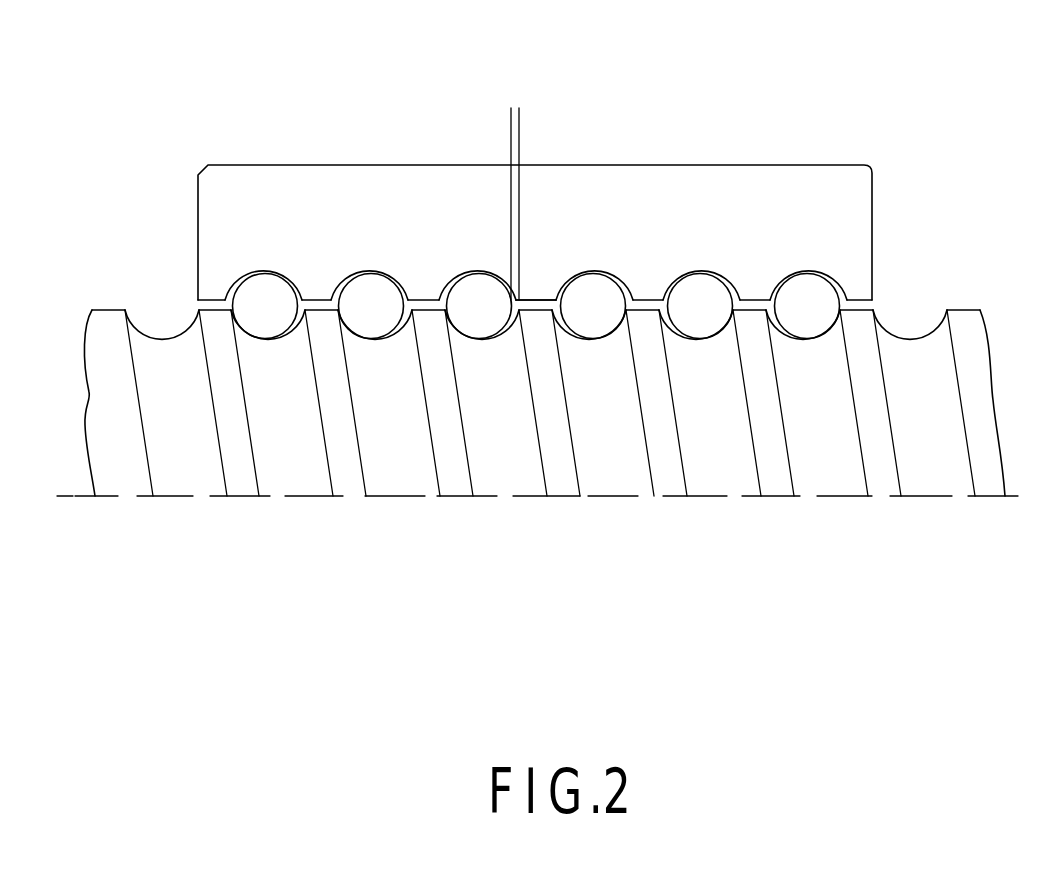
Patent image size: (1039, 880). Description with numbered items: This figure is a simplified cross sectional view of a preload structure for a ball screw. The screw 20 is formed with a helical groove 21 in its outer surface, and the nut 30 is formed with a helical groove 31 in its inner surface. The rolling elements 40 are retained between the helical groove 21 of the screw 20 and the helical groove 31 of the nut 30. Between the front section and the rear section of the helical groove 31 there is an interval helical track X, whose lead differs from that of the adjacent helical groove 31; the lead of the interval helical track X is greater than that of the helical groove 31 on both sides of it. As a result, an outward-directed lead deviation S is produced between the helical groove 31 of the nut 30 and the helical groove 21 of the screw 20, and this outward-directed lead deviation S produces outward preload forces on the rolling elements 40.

The screw 20 is at (763, 467).
The helical groove 21 is at (697, 340).
The nut 30 is at (855, 155).
The helical groove 31 is at (625, 283).
The rolling elements 40 is at (823, 308).
The lead deviation S is at (547, 117).
The interval helical track X is at (533, 290).